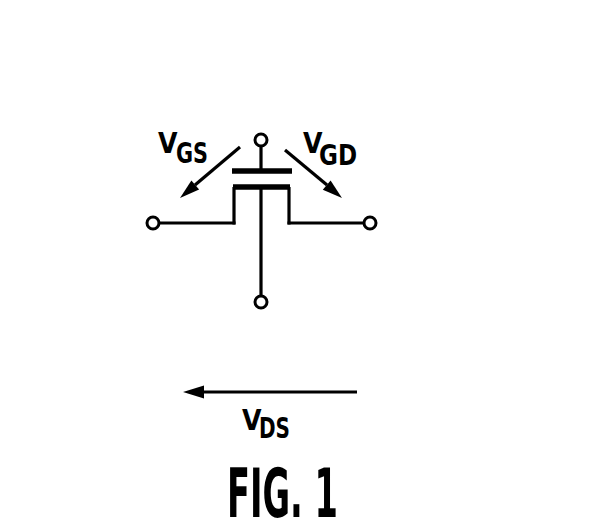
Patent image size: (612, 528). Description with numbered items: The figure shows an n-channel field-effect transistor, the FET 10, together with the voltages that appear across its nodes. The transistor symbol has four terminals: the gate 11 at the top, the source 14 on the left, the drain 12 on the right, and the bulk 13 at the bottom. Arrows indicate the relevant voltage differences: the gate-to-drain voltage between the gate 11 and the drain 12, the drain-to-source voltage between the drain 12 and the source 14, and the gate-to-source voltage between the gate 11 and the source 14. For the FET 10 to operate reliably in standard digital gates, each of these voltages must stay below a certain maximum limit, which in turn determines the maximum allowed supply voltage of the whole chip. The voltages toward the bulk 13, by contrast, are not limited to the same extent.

The n-channel FET 10 is at (437, 119).
The gate 11 is at (266, 134).
The drain 12 is at (376, 223).
The bulk 13 is at (267, 303).
The source 14 is at (147, 223).